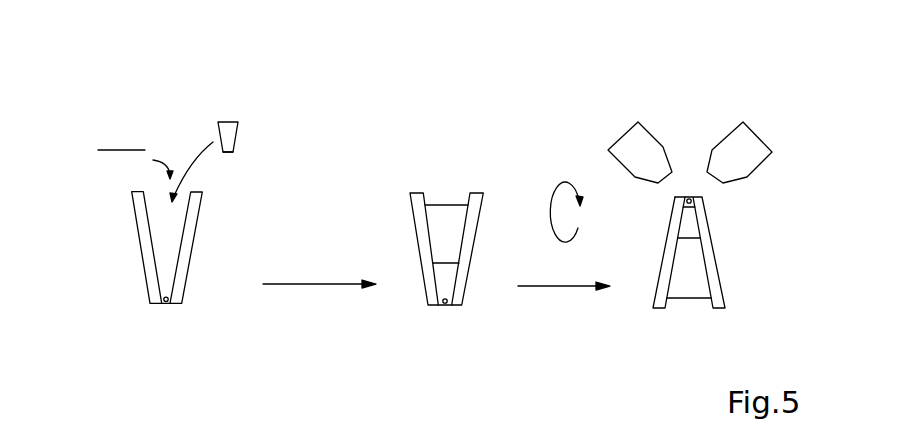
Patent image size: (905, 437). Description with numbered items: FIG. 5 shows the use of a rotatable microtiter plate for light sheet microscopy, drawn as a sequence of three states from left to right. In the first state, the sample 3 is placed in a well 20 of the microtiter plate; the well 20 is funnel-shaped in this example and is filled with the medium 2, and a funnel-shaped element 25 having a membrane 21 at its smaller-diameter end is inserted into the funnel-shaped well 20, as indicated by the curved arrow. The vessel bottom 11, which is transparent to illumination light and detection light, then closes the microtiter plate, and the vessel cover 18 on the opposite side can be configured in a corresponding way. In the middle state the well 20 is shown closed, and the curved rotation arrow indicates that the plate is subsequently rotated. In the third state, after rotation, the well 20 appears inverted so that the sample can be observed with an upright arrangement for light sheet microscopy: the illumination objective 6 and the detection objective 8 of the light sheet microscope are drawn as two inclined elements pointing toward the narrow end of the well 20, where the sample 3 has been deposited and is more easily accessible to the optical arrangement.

The vessel bottom 11 is at (112, 150).
The funnel-shaped element 25 is at (233, 130).
The membrane 21 is at (228, 153).
The well 20 is at (143, 248).
The medium 2 is at (172, 252).
The sample 3 is at (166, 305).
The vessel cover 18 is at (164, 304).
The illumination objective 6 is at (650, 147).
The detection objective 8 is at (747, 138).